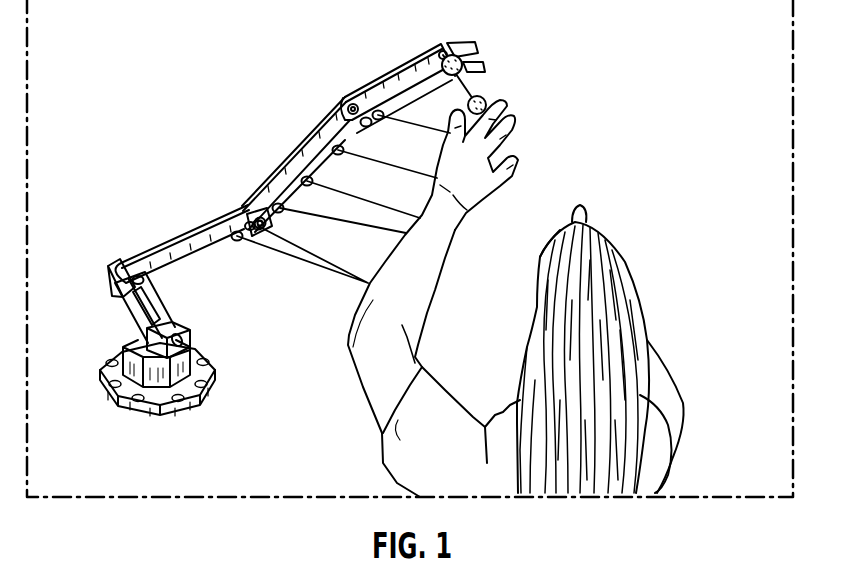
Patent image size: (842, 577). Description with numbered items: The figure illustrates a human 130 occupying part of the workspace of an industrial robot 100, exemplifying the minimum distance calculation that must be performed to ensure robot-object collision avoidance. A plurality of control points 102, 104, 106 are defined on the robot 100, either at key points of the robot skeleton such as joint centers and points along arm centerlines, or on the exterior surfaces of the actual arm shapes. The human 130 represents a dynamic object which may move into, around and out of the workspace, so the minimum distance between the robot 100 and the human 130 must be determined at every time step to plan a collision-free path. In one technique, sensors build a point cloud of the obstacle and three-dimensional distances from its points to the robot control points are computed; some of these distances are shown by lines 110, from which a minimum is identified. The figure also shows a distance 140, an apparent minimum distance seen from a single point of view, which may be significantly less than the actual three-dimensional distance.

The robot 100 is at (121, 240).
The control point 102 is at (237, 213).
The control point 104 is at (268, 172).
The control point 106 is at (305, 147).
The lines 110 is at (312, 282).
The human 130 is at (650, 234).
The distance 140 is at (488, 78).